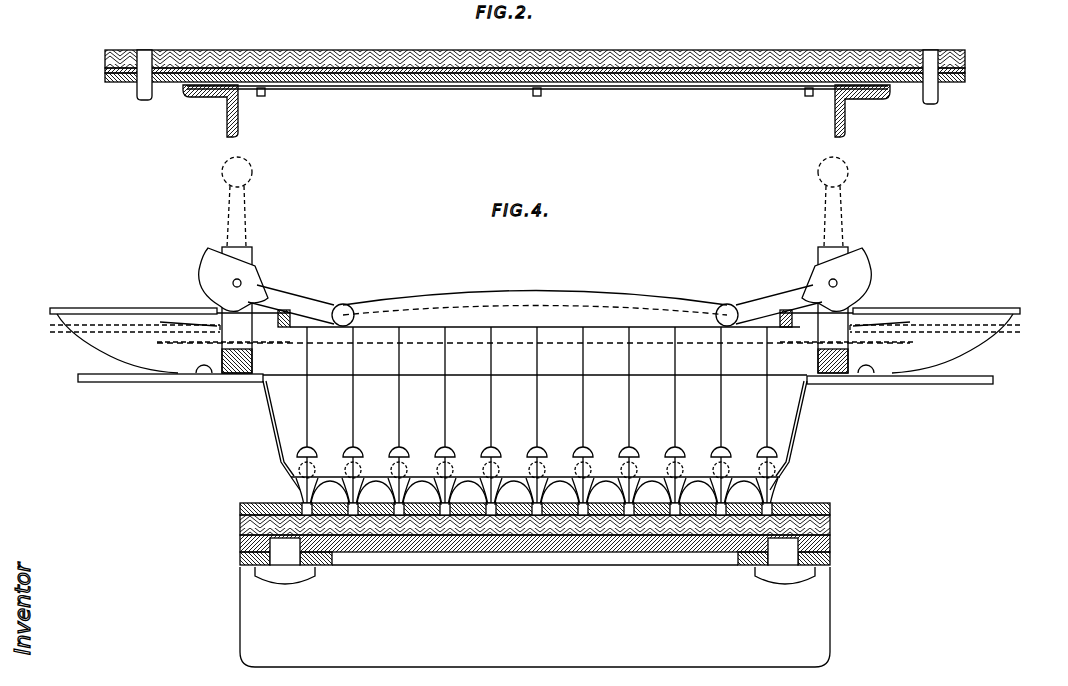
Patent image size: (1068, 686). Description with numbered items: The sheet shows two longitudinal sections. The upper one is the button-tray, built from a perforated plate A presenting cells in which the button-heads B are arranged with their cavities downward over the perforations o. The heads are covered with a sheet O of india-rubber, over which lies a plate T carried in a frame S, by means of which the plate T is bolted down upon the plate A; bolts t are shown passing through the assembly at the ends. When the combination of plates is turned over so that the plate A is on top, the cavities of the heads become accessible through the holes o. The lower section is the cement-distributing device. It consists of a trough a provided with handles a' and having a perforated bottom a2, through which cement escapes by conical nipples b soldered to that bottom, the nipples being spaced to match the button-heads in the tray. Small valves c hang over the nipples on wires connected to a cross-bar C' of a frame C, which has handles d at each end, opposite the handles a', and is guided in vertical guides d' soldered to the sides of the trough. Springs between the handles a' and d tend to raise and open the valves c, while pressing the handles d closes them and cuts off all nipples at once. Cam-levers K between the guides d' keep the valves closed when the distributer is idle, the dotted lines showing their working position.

In FIG. 2, the sheet of india-rubber O is at (105, 64).
In FIG. 4, the sheet of india-rubber O is at (240, 520).
In FIG. 2, the fastening bolt t is at (537, 68).
In FIG. 2, the perforations o is at (559, 64).
In FIG. 4, the perforations o is at (830, 525).
In FIG. 2, the perforated plate A is at (535, 50).
In FIG. 4, the perforated plate A is at (535, 501).
In FIG. 2, the plate T is at (130, 82).
In FIG. 4, the plate T is at (584, 548).
In FIG. 2, the button-heads B is at (285, 78).
In FIG. 4, the button-heads B is at (440, 535).
In FIG. 2, the frame S is at (536, 111).
In FIG. 4, the frame S is at (535, 609).
In FIG. 4, the vertical guides d' is at (535, 265).
In FIG. 4, the cam-levers K is at (535, 287).
In FIG. 4, the cross-bar C' is at (535, 294).
In FIG. 4, the handles d is at (535, 333).
In FIG. 4, the frame C is at (533, 326).
In FIG. 4, the handles a' is at (535, 384).
In FIG. 4, the trough a is at (535, 429).
In FIG. 4, the perforated bottom a2 is at (531, 479).
In FIG. 4, the small valves c is at (537, 421).
In FIG. 4, the conical nipples b is at (535, 491).